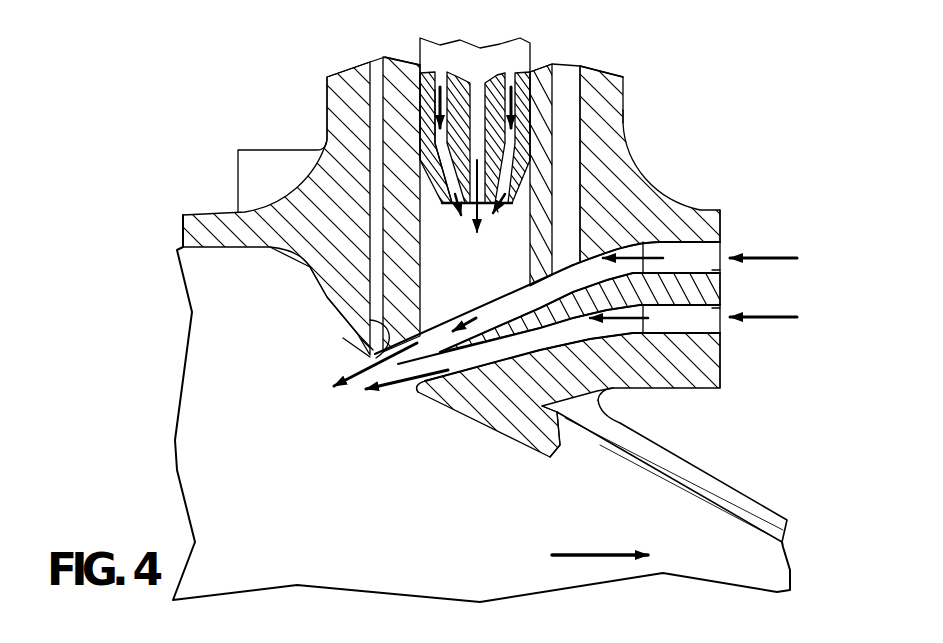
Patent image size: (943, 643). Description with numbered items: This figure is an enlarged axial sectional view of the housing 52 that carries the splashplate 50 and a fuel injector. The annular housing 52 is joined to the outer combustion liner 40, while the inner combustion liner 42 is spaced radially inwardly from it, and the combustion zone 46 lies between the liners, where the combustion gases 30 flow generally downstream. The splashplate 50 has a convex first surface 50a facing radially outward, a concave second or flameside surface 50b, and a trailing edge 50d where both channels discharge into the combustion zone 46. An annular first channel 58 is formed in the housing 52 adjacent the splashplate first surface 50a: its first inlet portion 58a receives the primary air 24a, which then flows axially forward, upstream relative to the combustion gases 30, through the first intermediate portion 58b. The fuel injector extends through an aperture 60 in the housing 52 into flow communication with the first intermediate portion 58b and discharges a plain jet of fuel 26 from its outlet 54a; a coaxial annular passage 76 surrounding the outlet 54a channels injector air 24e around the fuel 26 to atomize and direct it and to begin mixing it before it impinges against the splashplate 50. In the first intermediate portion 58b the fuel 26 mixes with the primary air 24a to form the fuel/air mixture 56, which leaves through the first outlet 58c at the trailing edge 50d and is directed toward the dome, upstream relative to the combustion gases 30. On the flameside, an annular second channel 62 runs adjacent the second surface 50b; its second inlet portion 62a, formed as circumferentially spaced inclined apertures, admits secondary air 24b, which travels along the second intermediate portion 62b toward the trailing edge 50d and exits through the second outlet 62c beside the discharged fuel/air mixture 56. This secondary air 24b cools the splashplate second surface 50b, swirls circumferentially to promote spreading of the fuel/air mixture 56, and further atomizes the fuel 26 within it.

The primary air 24a is at (775, 257).
The secondary air 24b is at (787, 320).
The injector air 24e is at (434, 101).
The fuel 26 is at (472, 224).
The combustion gases 30 is at (578, 553).
The outer combustion liner 40 is at (740, 497).
The inner combustion liner 42 is at (481, 40).
The combustion zone 46 is at (348, 522).
The splashplate 50 is at (592, 241).
The splashplate first surface 50a is at (563, 270).
The splashplate second surface 50b is at (548, 333).
The trailing edge 50d is at (398, 392).
The housing 52 is at (623, 103).
The outlet 54a is at (498, 210).
The fuel/air mixture 56 is at (350, 380).
The first channel 58 is at (720, 248).
The first inlet portion 58a is at (720, 267).
The first intermediate portion 58b is at (503, 302).
The first outlet 58c is at (373, 347).
The apertures 60 is at (420, 262).
The second channel 62 is at (720, 327).
The second inlet portion 62a is at (720, 308).
The second intermediate portion 62b is at (498, 403).
The second outlet 62c is at (417, 397).
The coaxial annular passage 76 is at (434, 180).